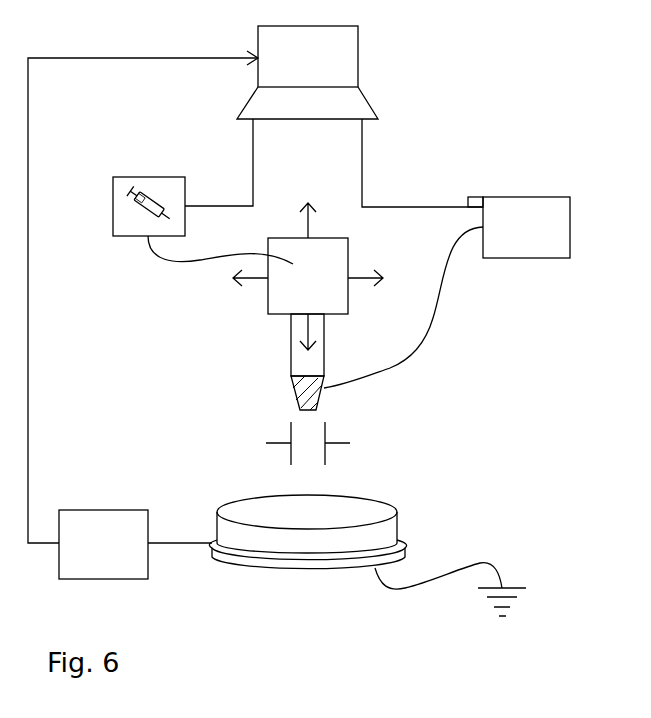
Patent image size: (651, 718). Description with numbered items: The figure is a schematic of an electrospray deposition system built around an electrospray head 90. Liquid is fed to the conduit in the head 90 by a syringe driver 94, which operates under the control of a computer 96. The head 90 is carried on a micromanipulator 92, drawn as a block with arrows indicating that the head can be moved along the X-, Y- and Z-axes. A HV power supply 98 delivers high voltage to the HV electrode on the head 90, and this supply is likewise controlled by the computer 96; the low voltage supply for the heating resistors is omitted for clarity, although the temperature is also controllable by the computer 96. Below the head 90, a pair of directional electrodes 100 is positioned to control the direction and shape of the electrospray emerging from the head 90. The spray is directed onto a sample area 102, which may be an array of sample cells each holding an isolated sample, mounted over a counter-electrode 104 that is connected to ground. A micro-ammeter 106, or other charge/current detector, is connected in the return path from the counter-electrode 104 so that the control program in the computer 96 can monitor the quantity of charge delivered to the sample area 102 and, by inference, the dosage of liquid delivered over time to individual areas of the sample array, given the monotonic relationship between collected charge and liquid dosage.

The electrospray head 90 is at (295, 391).
The positioning stage 92 is at (288, 287).
The syringe driver 94 is at (155, 177).
The computer 96 is at (358, 50).
The HV power supply 98 is at (528, 197).
The directional electrodes 100 is at (377, 442).
The sample area 102 is at (245, 505).
The counter-electrode 104 is at (405, 535).
The micro-ammeter 106 is at (106, 510).